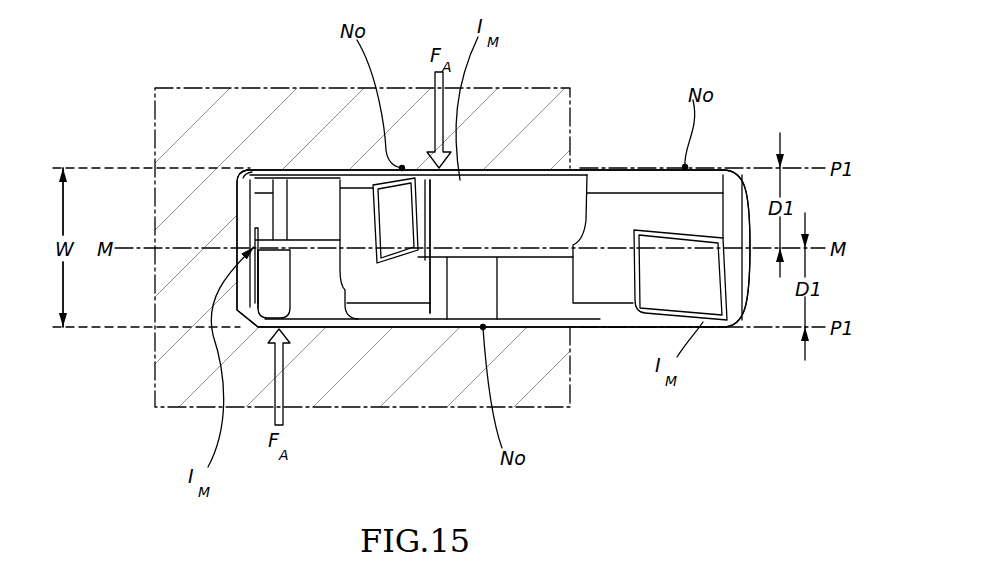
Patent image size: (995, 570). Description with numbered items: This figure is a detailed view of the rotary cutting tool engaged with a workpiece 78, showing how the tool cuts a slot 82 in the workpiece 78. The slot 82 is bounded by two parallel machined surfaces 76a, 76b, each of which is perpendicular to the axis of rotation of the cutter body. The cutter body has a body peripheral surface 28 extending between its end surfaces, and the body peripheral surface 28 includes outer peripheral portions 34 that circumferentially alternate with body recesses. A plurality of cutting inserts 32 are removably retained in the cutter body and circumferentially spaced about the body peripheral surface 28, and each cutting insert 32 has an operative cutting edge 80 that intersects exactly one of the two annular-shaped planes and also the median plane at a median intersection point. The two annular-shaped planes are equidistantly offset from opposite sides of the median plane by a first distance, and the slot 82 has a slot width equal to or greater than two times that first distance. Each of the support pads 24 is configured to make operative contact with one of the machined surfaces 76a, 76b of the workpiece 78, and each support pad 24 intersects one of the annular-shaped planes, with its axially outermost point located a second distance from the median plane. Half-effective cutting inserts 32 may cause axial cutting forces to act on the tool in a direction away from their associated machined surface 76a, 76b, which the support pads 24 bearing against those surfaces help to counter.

The support pad 24 is at (382, 172).
The body peripheral surface 28 is at (730, 172).
The cutting insert 32 is at (452, 218).
The outer peripheral portion 34 is at (597, 284).
The machined surface 76a is at (505, 187).
The machined surface 76b is at (510, 312).
The workpiece 78 is at (182, 362).
The operative cutting edge 80 is at (403, 177).
The slot 82 is at (242, 215).